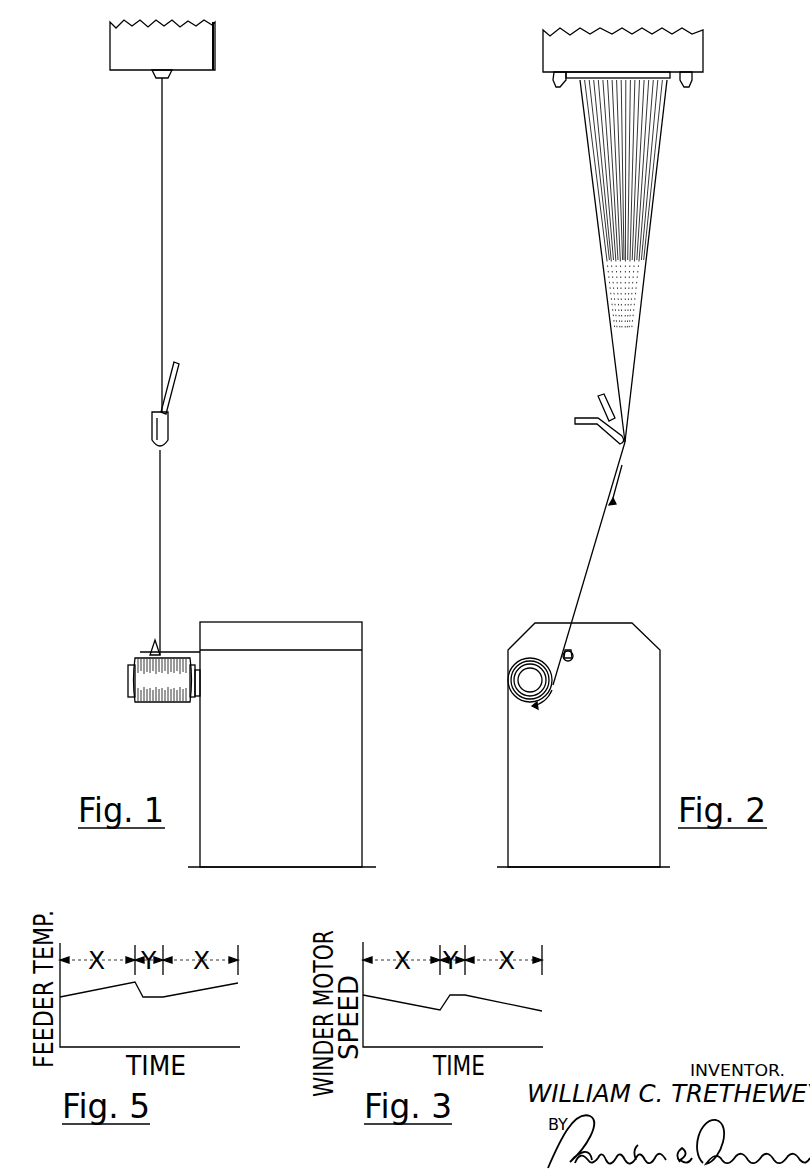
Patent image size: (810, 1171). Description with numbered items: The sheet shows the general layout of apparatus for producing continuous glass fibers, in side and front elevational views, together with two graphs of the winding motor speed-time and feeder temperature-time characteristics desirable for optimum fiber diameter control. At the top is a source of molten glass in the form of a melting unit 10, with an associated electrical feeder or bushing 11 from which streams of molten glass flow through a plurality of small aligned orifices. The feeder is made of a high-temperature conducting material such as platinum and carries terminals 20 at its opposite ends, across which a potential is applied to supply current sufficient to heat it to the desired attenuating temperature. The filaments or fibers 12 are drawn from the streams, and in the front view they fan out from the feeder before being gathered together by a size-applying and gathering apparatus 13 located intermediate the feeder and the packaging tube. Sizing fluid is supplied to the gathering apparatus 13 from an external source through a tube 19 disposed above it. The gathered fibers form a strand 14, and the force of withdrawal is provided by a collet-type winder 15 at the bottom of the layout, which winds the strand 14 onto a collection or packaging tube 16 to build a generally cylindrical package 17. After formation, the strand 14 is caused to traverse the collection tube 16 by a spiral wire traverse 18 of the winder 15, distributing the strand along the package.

In FIG. 1, the melting unit 10 is at (215, 52).
In FIG. 2, the melting unit 10 is at (703, 52).
In FIG. 1, the feeder 11 is at (170, 80).
In FIG. 2, the feeder 11 is at (670, 78).
In FIG. 1, the fibers 12 is at (162, 185).
In FIG. 2, the fibers 12 is at (613, 160).
In FIG. 1, the size-applying and gathering apparatus 13 is at (168, 432).
In FIG. 2, the size-applying and gathering apparatus 13 is at (605, 436).
In FIG. 1, the strand 14 is at (162, 497).
In FIG. 2, the strand 14 is at (604, 510).
In FIG. 1, the collet-type winder 15 is at (368, 600).
In FIG. 2, the collet-type winder 15 is at (633, 623).
In FIG. 1, the packaging tube 16 is at (130, 665).
In FIG. 2, the packaging tube 16 is at (517, 680).
In FIG. 1, the package 17 is at (150, 700).
In FIG. 2, the package 17 is at (530, 656).
In FIG. 1, the spiral wire traverse 18 is at (155, 640).
In FIG. 2, the spiral wire traverse 18 is at (570, 650).
In FIG. 1, the tube 19 is at (178, 378).
In FIG. 2, the tube 19 is at (602, 400).
In FIG. 2, the terminals 20 is at (555, 80).